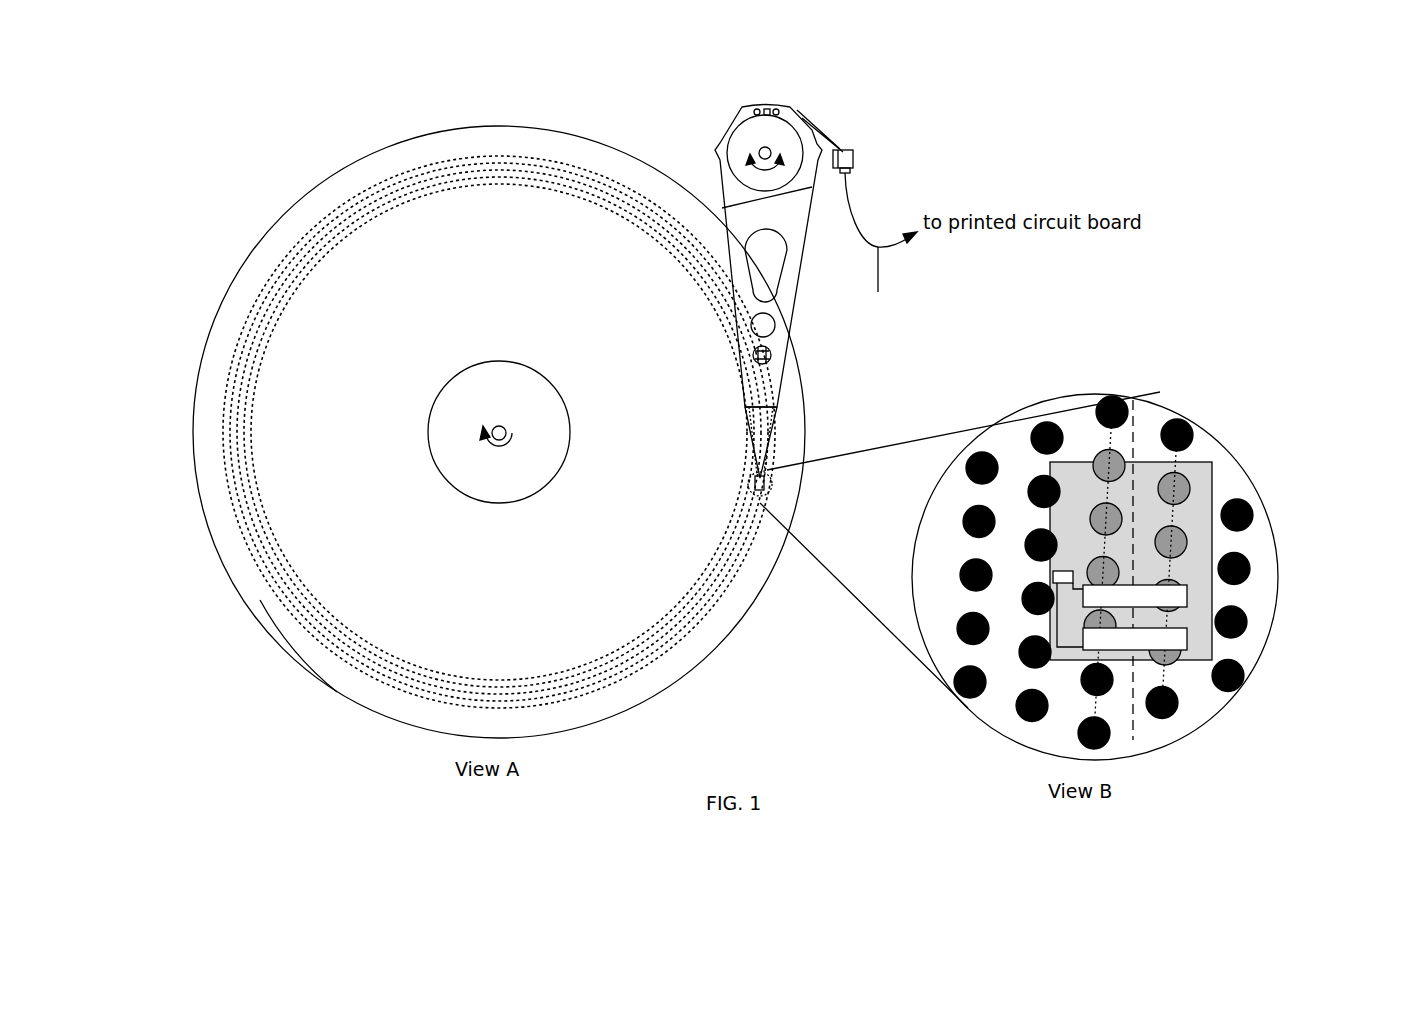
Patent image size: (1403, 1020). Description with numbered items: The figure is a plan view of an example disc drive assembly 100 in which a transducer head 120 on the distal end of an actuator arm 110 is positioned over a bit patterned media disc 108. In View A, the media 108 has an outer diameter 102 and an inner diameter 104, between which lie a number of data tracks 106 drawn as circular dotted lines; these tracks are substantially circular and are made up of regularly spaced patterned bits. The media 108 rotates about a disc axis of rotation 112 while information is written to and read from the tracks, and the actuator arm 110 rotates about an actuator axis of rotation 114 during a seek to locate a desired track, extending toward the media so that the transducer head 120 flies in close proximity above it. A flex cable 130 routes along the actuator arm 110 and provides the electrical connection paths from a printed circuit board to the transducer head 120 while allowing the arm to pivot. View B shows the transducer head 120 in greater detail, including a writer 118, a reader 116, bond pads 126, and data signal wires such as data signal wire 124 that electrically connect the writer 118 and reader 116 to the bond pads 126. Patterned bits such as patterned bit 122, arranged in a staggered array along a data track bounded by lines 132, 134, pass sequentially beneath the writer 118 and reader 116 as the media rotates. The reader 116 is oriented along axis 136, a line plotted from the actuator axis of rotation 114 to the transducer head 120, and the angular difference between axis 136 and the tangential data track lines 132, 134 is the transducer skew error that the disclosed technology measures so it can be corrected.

The disc drive assembly 100 is at (952, 120).
The outer diameter 102 is at (567, 134).
The inner diameter 104 is at (490, 362).
The data tracks 106 is at (385, 175).
The bit patterned media disc 108 is at (337, 692).
The actuator arm 110 is at (730, 247).
The disc axis of rotation 112 is at (505, 439).
The actuator axis of rotation 114 is at (765, 153).
The reader 116 is at (1187, 640).
The writer 118 is at (1187, 595).
The transducer head 120 is at (763, 484).
The patterned bit 122 is at (1108, 396).
The data signal wire 124 is at (1057, 612).
The bond pads 126 is at (1053, 578).
The flex cable 130 is at (878, 292).
The data track 132 is at (1095, 707).
The data track 134 is at (1163, 683).
The axis 136 is at (1105, 428).